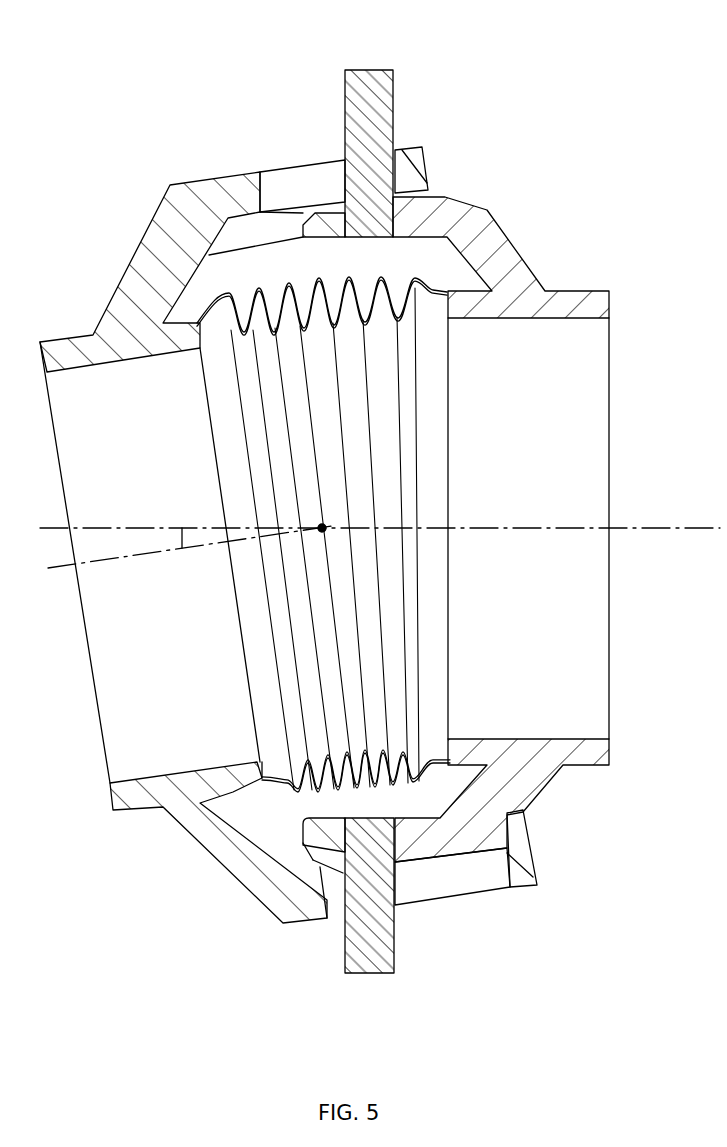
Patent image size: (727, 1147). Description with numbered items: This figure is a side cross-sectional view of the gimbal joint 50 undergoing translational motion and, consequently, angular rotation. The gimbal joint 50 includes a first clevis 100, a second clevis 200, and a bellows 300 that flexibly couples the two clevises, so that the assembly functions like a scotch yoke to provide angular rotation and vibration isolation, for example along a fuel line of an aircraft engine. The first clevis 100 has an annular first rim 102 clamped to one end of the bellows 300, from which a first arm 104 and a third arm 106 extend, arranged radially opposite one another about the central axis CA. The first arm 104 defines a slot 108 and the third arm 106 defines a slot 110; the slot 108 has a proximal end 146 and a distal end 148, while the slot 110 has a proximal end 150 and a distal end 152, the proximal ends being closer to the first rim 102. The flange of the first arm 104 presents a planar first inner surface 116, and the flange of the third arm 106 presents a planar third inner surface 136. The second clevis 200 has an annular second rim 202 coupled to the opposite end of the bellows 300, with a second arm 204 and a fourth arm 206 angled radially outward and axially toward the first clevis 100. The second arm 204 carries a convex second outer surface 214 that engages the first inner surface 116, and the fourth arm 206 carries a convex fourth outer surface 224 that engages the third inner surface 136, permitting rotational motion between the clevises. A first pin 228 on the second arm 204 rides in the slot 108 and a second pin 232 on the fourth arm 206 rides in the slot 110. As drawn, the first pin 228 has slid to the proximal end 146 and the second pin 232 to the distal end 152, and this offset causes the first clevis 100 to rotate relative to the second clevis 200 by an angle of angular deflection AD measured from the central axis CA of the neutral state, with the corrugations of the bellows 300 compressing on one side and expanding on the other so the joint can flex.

The gimbal joint 50 is at (563, 78).
The first clevis 100 is at (335, 530).
The first rim 102 is at (128, 803).
The first arm 104 is at (254, 845).
The third arm 106 is at (110, 290).
The slot 108 is at (478, 882).
The slot 110 is at (296, 168).
The first inner surface 116 is at (528, 833).
The third inner surface 136 is at (245, 222).
The proximal end 146 is at (333, 912).
The distal end 148 is at (509, 885).
The proximal end 150 is at (257, 205).
The distal end 152 is at (398, 143).
The second clevis 200 is at (468, 522).
The second rim 202 is at (586, 297).
The second arm 204 is at (549, 785).
The fourth arm 206 is at (532, 250).
The second outer surface 214 is at (410, 869).
The fourth outer surface 224 is at (447, 195).
The first pin 228 is at (373, 829).
The second pin 232 is at (360, 97).
The bellows 300 is at (270, 300).
The central axis CA is at (627, 528).
The angle of angular deflection AD is at (178, 545).